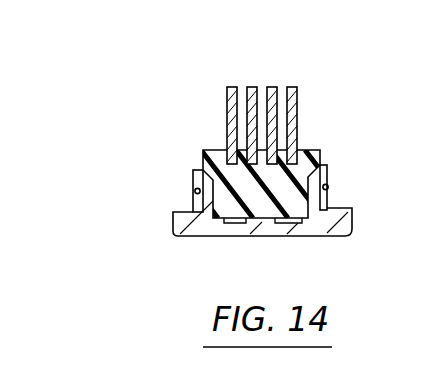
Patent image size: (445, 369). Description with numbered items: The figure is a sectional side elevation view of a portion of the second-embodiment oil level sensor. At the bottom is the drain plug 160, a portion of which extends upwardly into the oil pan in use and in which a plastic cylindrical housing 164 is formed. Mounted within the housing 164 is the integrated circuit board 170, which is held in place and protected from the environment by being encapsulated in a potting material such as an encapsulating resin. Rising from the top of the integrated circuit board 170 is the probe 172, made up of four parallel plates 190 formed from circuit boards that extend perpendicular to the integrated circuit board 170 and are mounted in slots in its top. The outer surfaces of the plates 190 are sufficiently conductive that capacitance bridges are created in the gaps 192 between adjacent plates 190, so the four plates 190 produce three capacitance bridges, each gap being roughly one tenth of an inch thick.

The drain plug 160 is at (172, 232).
The housing 164 is at (193, 173).
The integrated circuit board 170 is at (321, 154).
The probe 172 is at (253, 116).
The parallel plates 190 is at (227, 109).
The gaps 192 is at (239, 87).